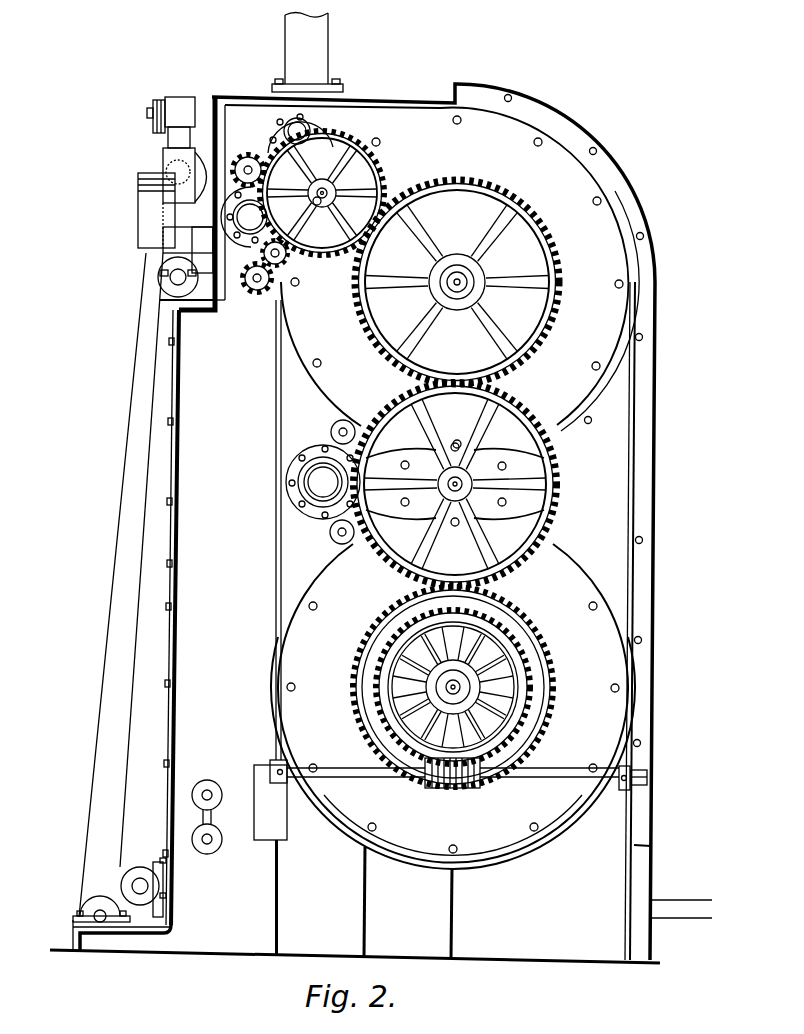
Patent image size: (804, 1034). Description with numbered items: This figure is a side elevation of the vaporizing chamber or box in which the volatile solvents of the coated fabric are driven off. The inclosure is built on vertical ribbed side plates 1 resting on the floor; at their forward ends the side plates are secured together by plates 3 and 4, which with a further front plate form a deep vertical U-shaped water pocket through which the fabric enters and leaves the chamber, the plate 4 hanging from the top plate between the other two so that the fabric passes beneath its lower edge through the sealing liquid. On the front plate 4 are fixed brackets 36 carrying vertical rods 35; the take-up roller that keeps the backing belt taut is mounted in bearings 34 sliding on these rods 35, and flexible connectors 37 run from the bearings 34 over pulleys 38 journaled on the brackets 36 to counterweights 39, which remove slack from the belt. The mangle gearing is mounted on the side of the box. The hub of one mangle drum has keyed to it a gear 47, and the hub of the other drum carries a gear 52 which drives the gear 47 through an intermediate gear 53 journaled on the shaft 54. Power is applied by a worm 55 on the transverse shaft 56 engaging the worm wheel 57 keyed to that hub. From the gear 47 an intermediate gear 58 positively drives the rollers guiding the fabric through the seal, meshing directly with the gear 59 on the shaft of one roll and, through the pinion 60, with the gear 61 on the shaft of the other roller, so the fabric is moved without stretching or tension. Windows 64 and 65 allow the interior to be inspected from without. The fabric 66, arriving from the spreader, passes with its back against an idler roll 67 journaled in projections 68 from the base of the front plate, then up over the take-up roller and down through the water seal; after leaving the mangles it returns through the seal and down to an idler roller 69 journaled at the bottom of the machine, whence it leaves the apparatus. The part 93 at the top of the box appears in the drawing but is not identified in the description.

The side plates 1 is at (568, 937).
The plate 3 is at (170, 680).
The plate 4 is at (205, 115).
The bearings 34 is at (178, 195).
The vertical rods 35 is at (166, 140).
The brackets 36 is at (174, 97).
The flexible connectors 37 is at (155, 130).
The pulleys 38 is at (150, 100).
The counterweights 39 is at (152, 213).
The gear 47 is at (497, 190).
The gear 52 is at (542, 673).
The intermediate gear 53 is at (553, 517).
The shaft 54 is at (527, 479).
The worm 55 is at (458, 792).
The transverse shaft 56 is at (541, 784).
The worm wheel 57 is at (527, 722).
The intermediate gear 58 is at (387, 168).
The gear 59 is at (246, 157).
The pinion 60 is at (288, 268).
The gear 61 is at (255, 296).
The window 64 is at (316, 122).
The window 65 is at (296, 478).
The fabric 66 is at (681, 926).
The idler roll 67 is at (88, 907).
The projections 68 is at (80, 940).
The idler roller 69 is at (141, 868).
The column 93 is at (328, 38).